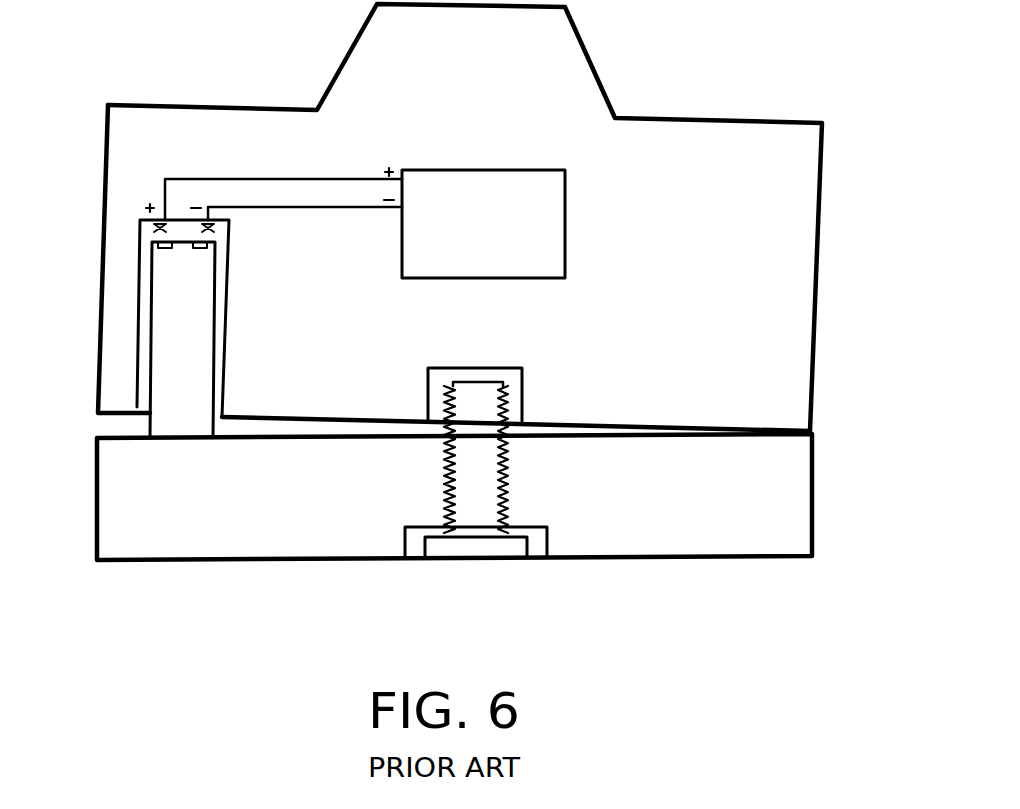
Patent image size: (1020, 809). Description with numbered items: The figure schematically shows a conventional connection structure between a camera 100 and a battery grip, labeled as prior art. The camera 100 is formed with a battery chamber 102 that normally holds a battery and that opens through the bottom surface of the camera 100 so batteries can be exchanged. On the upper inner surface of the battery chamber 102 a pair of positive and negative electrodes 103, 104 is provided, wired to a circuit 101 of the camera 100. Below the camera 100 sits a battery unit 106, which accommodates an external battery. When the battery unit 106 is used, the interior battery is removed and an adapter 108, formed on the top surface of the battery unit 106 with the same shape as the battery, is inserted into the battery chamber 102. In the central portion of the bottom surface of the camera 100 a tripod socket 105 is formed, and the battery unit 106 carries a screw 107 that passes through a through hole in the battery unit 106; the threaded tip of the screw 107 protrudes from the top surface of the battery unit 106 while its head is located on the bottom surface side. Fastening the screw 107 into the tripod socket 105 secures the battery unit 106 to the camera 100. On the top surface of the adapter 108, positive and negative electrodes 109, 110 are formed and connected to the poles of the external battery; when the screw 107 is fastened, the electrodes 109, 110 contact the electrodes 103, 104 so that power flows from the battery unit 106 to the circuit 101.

The camera 100 is at (647, 50).
The circuit 101 is at (565, 219).
The battery chamber 102 is at (137, 372).
The positive electrode 103 is at (140, 232).
The negative electrode 104 is at (230, 225).
The tripod socket 105 is at (450, 385).
The battery unit 106 is at (812, 497).
The screw 107 is at (505, 397).
The adapter 108 is at (222, 345).
The positive electrode 109 is at (150, 258).
The negative electrode 110 is at (200, 250).